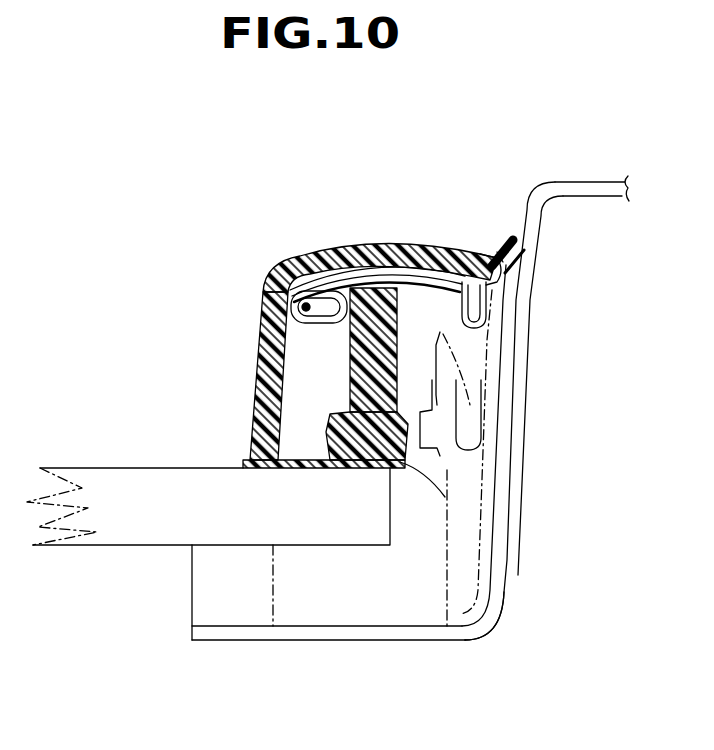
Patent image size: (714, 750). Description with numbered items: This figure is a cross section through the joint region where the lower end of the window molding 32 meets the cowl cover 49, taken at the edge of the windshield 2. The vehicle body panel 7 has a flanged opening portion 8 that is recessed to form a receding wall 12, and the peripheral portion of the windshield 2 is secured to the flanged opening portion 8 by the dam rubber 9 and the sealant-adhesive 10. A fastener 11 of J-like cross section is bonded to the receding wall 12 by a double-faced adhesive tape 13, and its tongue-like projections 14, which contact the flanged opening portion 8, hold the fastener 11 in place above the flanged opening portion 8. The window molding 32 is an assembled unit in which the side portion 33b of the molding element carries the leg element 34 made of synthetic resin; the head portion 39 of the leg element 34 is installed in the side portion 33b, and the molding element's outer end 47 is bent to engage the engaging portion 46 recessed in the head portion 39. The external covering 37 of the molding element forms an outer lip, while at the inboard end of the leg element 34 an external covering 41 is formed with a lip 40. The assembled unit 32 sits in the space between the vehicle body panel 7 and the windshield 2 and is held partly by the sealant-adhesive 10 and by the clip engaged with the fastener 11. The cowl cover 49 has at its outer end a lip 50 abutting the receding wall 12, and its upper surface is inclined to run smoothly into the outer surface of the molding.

The windshield 2 is at (82, 468).
The vehicle body panel 7 is at (585, 182).
The flanged opening portion 8 is at (212, 640).
The dam rubber 9 is at (192, 587).
The sealant-adhesive 10 is at (338, 597).
The fastener 11 is at (458, 474).
The receding wall 12 is at (518, 417).
The double-faced adhesive tape 13 is at (515, 368).
The tongue-like projections 14 is at (462, 624).
The window molding 32 is at (341, 324).
The side portion 33b is at (422, 275).
The leg element 34 is at (372, 330).
The external covering 37 is at (462, 262).
The head portion 39 is at (278, 270).
The lip 40 is at (262, 440).
The external covering 41 is at (450, 498).
The engaging portion 46 is at (470, 295).
The outer end 47 is at (510, 324).
The cowl cover 49 is at (250, 350).
The lip 50 is at (497, 255).